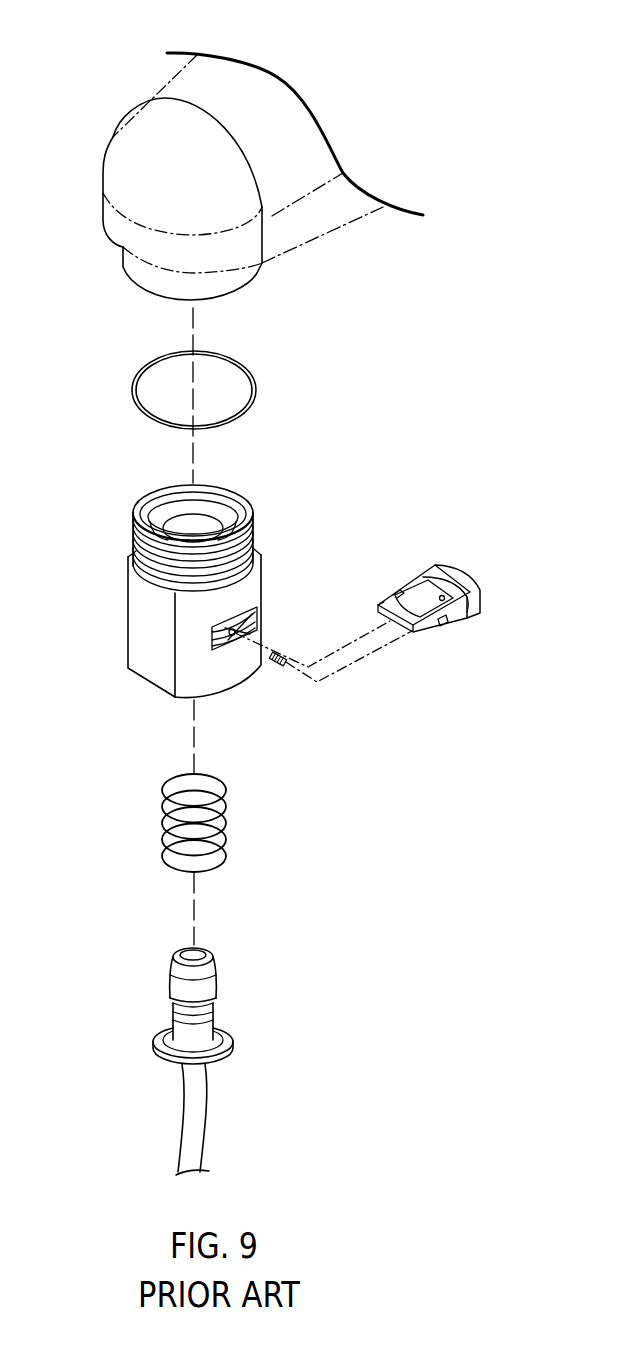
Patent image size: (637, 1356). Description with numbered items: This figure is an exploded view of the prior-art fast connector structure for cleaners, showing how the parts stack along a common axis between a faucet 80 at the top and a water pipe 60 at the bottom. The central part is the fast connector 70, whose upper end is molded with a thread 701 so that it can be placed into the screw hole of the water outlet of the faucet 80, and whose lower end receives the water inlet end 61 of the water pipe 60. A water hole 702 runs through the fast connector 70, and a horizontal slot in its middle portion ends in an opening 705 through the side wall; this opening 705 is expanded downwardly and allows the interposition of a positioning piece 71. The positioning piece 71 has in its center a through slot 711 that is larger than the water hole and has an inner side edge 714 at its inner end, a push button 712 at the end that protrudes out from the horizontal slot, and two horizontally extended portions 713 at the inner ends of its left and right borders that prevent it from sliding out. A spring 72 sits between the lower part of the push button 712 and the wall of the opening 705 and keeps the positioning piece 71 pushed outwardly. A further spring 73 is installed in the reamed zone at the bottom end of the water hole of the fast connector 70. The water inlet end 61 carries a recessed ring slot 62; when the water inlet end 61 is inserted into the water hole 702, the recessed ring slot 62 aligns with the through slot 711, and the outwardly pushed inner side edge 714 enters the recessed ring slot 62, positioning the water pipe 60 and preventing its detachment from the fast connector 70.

The faucet 80 is at (118, 101).
The fast connector 70 is at (178, 584).
The thread 701 is at (128, 542).
The water hole 702 is at (207, 530).
The opening 705 is at (257, 607).
The positioning piece 71 is at (437, 586).
The through slot 711 is at (418, 601).
The push button 712 is at (455, 575).
The horizontally extended portions 713 is at (442, 622).
The inner side edge 714 is at (378, 609).
The spring 72 is at (274, 665).
The spring 73 is at (162, 827).
The water pipe 60 is at (201, 1028).
The water inlet end 61 is at (200, 952).
The recessed ring slot 62 is at (173, 1000).